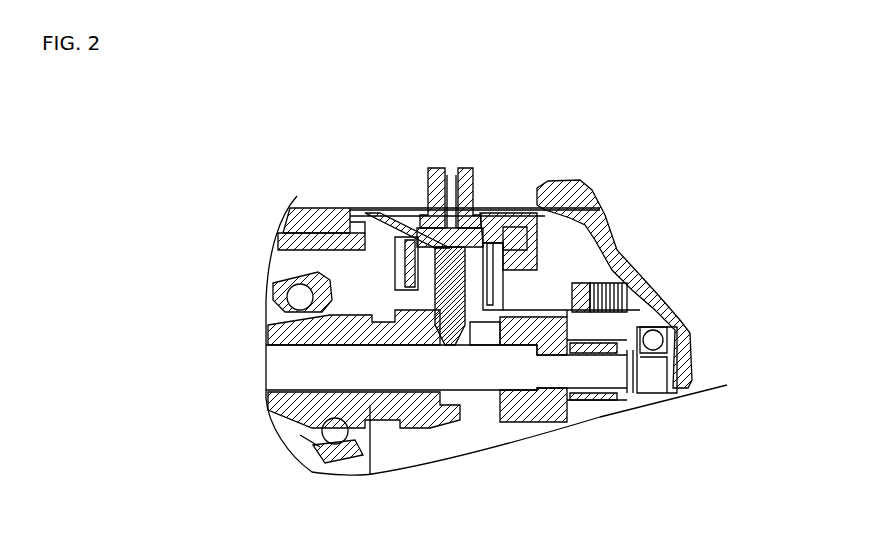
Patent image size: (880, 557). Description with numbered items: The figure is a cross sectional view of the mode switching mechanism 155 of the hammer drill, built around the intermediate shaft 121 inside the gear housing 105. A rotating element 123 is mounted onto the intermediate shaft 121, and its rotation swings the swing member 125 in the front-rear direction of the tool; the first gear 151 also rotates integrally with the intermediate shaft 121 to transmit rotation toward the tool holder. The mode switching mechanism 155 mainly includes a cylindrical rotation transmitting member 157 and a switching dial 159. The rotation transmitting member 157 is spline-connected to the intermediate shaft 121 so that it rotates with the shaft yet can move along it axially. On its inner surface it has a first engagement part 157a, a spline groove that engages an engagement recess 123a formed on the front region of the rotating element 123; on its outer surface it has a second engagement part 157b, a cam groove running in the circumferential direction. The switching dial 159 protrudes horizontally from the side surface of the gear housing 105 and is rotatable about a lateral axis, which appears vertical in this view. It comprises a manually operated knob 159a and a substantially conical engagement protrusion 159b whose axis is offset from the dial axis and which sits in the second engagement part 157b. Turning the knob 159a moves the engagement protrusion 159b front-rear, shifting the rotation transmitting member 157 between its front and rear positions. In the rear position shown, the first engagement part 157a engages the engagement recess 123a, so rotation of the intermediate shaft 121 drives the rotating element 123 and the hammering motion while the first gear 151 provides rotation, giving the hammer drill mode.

The gear housing 105 is at (632, 275).
The intermediate shaft 121 is at (297, 369).
The rotating element 123 is at (283, 420).
The engagement recess 123a is at (368, 420).
The swing member 125 is at (337, 460).
The first gear 151 is at (595, 400).
The mode switching mechanism 155 is at (426, 138).
The rotation transmitting member 157 is at (418, 420).
The first engagement part 157a is at (384, 330).
The second engagement part 157b is at (457, 413).
The switching dial 159 is at (503, 193).
The knob 159a is at (463, 172).
The engagement protrusion 159b is at (437, 330).